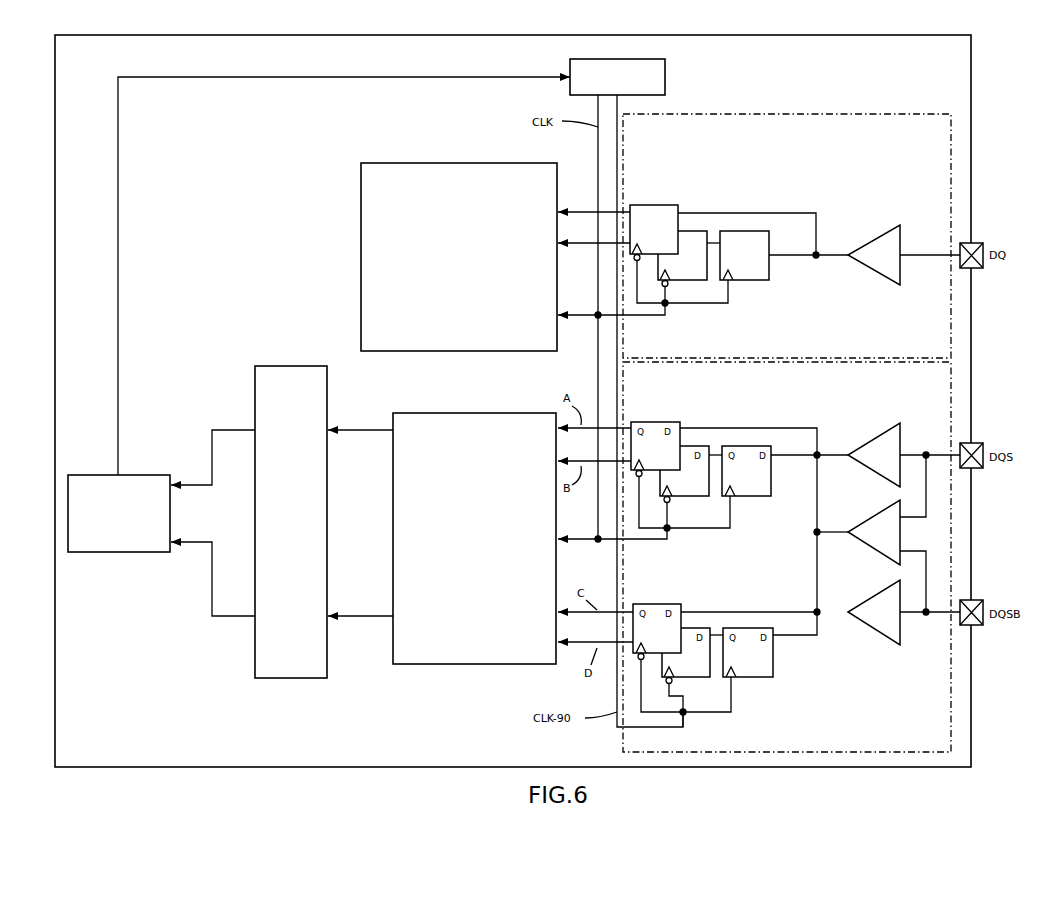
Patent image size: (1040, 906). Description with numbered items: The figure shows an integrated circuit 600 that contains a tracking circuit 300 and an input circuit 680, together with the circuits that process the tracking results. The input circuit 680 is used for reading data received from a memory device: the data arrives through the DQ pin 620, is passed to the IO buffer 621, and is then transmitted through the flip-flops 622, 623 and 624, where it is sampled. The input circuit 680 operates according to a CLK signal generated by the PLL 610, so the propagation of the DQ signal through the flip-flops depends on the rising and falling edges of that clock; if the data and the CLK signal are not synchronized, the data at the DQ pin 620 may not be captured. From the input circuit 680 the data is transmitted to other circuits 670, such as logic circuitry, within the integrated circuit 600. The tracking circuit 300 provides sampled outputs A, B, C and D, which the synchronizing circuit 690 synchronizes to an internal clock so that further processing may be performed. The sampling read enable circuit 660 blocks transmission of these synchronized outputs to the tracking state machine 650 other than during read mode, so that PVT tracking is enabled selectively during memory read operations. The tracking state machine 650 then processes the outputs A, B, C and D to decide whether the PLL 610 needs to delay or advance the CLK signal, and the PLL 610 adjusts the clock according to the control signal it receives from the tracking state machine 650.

The integrated circuit 600 is at (513, 401).
The PLL 610 is at (617, 77).
The DQ pin 620 is at (972, 246).
The IO buffer 621 is at (879, 250).
The flip-flop 622 is at (756, 284).
The flip-flop 623 is at (681, 222).
The flip-flop 624 is at (651, 205).
The tracking state machine 650 is at (119, 513).
The sampling read enable circuit 660 is at (291, 522).
The other circuits 670 is at (459, 257).
The input circuit 680 is at (787, 236).
The synchronizing circuit 690 is at (474, 538).
The tracking circuit 300 is at (787, 557).